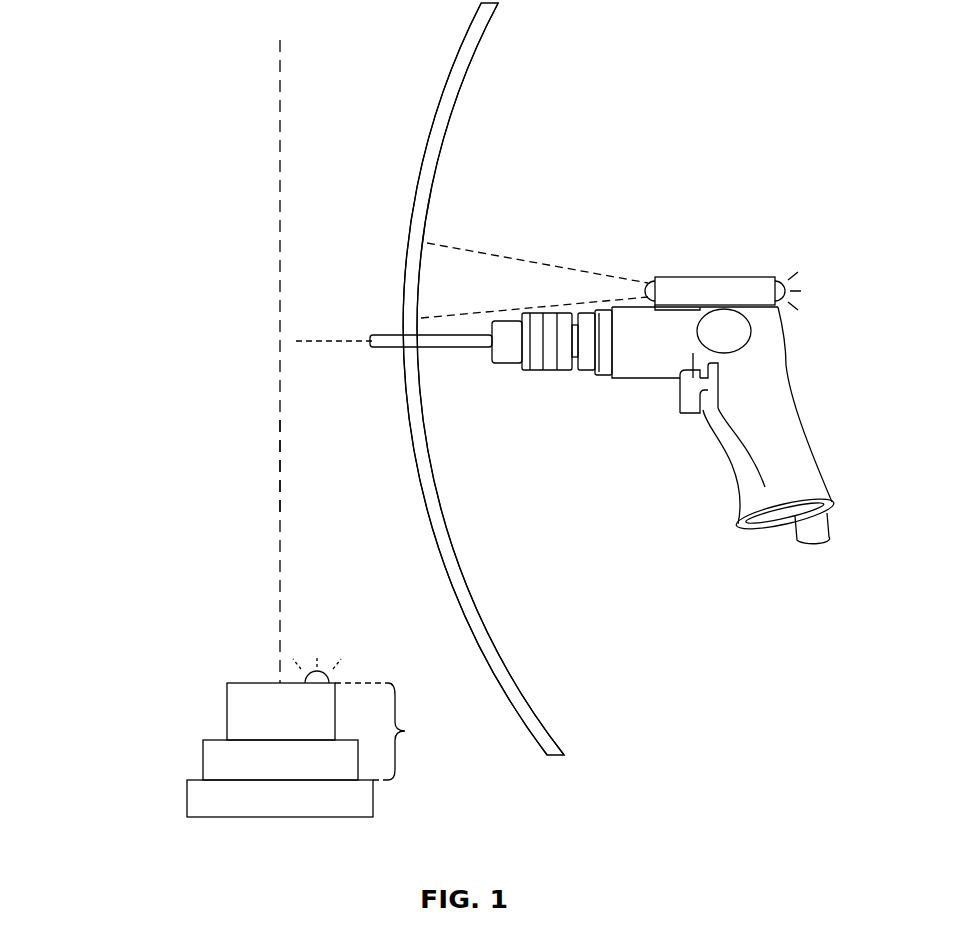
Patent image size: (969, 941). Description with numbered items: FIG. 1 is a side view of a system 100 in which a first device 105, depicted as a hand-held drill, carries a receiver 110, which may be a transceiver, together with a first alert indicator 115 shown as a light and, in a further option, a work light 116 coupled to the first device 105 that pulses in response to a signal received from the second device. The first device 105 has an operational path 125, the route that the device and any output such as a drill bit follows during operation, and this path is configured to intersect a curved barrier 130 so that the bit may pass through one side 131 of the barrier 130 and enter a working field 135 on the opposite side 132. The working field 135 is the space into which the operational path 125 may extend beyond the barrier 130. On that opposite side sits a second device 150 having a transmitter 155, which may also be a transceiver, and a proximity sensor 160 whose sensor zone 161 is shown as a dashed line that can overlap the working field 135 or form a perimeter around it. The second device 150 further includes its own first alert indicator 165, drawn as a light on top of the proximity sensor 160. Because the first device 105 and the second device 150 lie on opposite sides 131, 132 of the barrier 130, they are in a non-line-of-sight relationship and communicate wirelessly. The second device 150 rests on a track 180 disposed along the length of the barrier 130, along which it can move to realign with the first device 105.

The system 100 is at (138, 104).
The first device 105 is at (733, 457).
The receiver 110 is at (712, 277).
The first alert indicator 115 is at (786, 283).
The work light 116 is at (648, 282).
The operational path 125 is at (296, 341).
The barrier 130 is at (437, 105).
The one side of the barrier 131 is at (532, 681).
The opposite side of the barrier 132 is at (412, 155).
The working field 135 is at (310, 505).
The second device 150 is at (402, 731).
The transmitter 155 is at (213, 740).
The proximity sensor 160 is at (243, 683).
The sensor zone 161 is at (280, 163).
The first alert indicator 165 is at (322, 672).
The track 180 is at (187, 800).